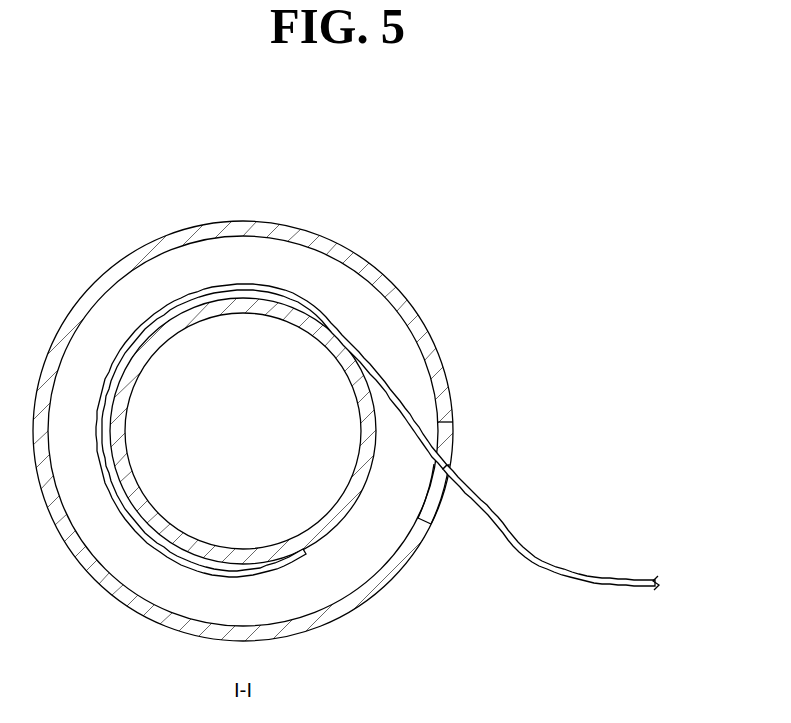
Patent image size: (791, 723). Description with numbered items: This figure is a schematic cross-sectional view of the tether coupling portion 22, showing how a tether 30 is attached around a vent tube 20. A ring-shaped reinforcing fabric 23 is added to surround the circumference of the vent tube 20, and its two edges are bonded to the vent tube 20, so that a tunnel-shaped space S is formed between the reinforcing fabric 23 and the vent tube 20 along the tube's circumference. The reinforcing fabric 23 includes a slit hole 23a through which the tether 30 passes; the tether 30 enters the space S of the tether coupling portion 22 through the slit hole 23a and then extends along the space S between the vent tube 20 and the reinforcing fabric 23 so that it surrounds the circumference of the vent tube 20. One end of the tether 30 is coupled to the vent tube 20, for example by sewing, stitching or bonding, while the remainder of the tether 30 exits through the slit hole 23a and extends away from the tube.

The vent tube 20 is at (246, 291).
The tether coupling portion 22 is at (303, 222).
The reinforcing fabric 23 is at (355, 260).
The slit hole 23a is at (432, 506).
The tether 30 is at (553, 546).
The space S is at (150, 289).